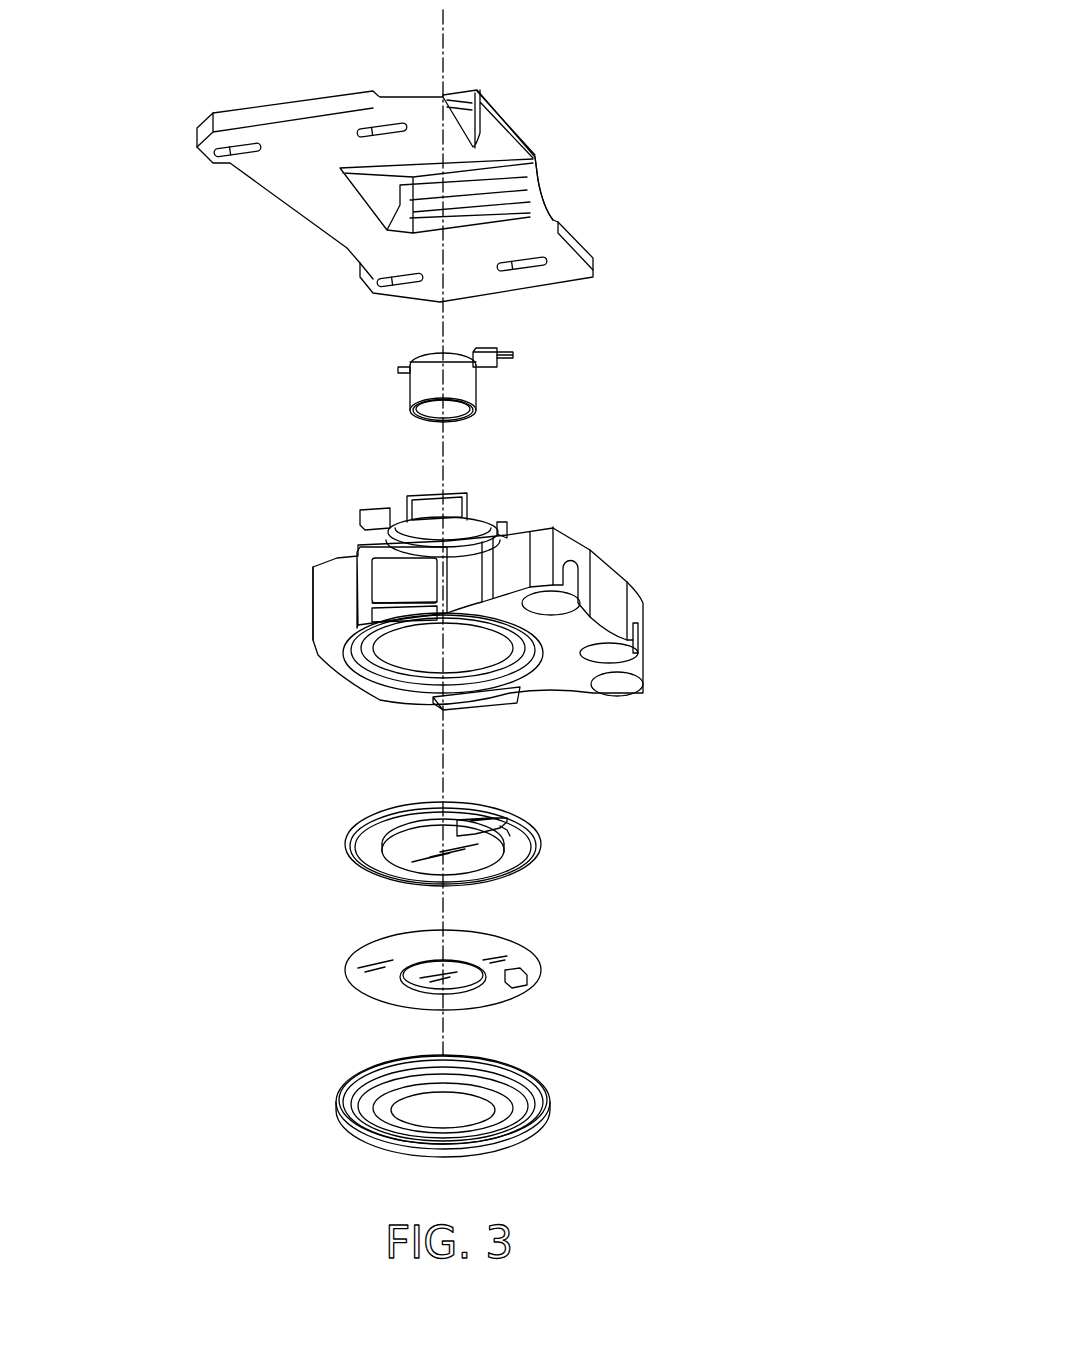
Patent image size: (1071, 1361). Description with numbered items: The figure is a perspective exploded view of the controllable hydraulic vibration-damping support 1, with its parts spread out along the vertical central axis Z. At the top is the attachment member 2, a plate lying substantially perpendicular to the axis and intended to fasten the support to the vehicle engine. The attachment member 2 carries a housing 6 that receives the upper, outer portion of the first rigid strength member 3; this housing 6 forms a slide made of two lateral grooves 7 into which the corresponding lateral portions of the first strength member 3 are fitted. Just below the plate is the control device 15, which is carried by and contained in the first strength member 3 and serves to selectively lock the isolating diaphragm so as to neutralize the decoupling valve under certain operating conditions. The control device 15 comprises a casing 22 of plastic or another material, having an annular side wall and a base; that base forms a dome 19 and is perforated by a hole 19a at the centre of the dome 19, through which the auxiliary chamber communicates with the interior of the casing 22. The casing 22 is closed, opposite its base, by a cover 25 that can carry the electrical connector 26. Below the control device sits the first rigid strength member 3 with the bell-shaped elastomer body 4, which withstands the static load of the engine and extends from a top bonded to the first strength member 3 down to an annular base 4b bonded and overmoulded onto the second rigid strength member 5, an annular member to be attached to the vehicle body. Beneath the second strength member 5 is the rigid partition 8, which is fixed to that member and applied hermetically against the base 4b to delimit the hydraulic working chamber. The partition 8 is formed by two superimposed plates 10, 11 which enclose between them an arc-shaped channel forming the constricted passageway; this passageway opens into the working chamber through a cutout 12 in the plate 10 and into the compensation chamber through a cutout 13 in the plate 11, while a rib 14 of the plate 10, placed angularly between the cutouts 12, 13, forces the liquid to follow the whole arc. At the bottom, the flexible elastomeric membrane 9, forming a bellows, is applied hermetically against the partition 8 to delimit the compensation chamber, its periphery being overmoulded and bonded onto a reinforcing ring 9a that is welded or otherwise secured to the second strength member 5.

The vibration-damping support 1 is at (648, 122).
The attachment member 2 is at (298, 195).
The first rigid strength member 3 is at (485, 513).
The elastomer body 4 is at (452, 625).
The annular base 4b is at (463, 653).
The second rigid strength member 5 is at (628, 593).
The housing 6 is at (527, 158).
The lateral grooves 7 is at (480, 103).
The rigid partition 8 is at (502, 904).
The flexible elastomeric membrane 9 is at (487, 1128).
The reinforcing ring 9a is at (545, 1122).
The plate 10 is at (520, 822).
The plate 11 is at (493, 990).
The cutout 12 is at (472, 823).
The cutout 13 is at (550, 993).
The rib 14 is at (500, 830).
The control device 15 is at (480, 387).
The dome 19 is at (433, 420).
The hole 19a is at (453, 417).
The casing 22 is at (425, 382).
The cover 25 is at (462, 347).
The electrical connector 26 is at (513, 377).